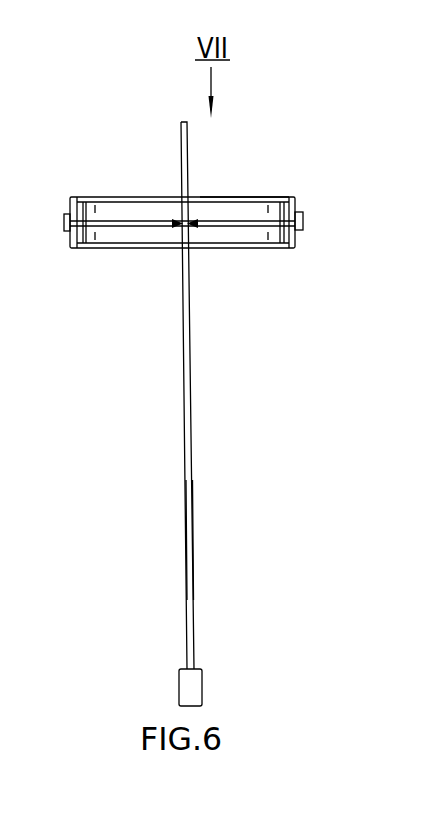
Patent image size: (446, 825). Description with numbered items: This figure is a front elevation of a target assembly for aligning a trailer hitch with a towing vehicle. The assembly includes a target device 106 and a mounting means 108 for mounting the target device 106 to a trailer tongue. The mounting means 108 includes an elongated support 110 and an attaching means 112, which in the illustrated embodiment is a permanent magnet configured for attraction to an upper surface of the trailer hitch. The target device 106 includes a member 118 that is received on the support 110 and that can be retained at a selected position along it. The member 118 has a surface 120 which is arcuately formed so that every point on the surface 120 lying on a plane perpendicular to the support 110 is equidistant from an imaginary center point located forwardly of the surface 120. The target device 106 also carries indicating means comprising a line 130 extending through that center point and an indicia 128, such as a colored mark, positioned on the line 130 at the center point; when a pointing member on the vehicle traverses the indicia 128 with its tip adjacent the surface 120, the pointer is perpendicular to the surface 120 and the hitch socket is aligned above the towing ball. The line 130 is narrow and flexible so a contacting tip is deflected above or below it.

The target device 106 is at (115, 197).
The surface 120 is at (143, 212).
The member 118 is at (227, 197).
The line 130 is at (133, 223).
The indicia 128 is at (190, 223).
The mounting means 108 is at (205, 350).
The elongated support 110 is at (193, 541).
The attaching means 112 is at (200, 684).